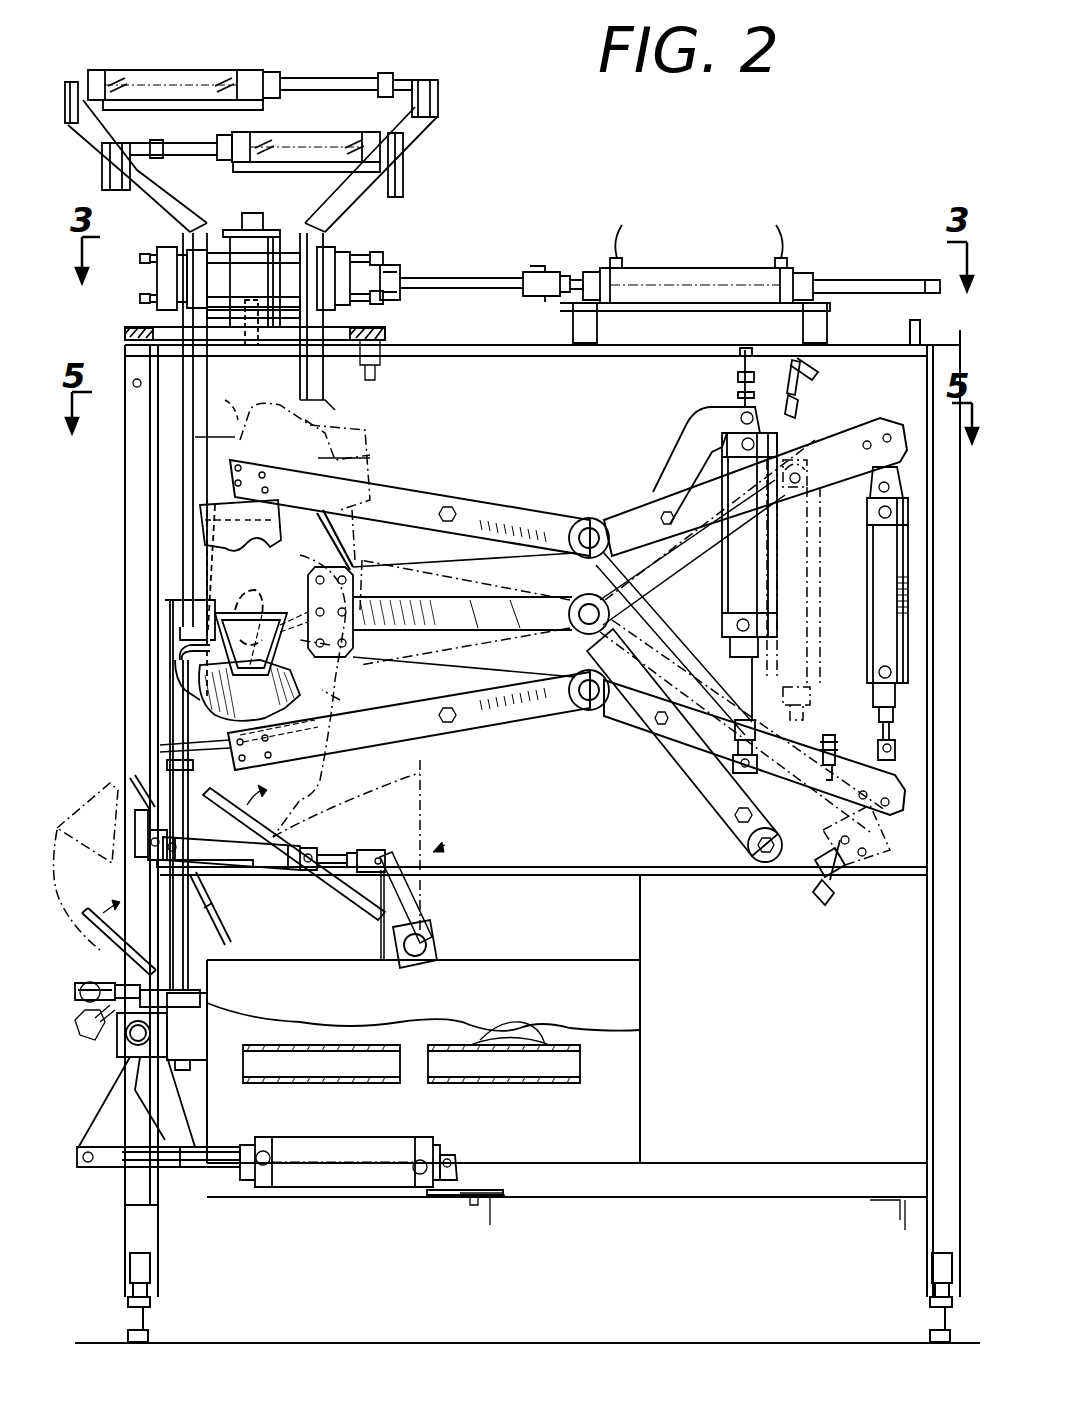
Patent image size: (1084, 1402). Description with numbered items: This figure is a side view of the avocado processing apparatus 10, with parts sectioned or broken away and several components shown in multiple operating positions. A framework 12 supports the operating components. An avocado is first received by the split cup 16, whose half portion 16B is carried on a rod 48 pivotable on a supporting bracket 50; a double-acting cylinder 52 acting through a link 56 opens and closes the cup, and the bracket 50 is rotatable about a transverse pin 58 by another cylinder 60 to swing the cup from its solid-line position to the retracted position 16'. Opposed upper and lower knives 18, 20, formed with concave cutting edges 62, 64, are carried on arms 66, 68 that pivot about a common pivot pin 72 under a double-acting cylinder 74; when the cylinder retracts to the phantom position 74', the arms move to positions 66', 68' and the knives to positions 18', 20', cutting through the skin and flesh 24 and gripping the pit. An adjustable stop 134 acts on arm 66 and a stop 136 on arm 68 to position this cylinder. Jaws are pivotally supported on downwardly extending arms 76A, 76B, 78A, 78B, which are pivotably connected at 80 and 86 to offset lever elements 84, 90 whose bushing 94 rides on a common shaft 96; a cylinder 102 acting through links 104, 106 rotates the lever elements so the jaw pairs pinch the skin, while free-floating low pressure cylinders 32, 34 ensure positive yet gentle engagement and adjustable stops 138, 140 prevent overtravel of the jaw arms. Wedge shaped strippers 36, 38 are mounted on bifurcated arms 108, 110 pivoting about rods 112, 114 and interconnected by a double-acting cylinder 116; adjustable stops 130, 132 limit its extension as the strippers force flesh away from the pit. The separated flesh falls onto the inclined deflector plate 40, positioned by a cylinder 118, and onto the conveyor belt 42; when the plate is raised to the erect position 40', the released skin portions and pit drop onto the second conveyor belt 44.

The apparatus 10 is at (873, 228).
The framework 12 is at (123, 456).
The split cup 16 is at (142, 620).
The cup half portion 16B is at (185, 652).
The retracted position of split cup 16' is at (104, 865).
The upper knife 18 is at (142, 600).
The shifted position of upper knife 18' is at (374, 440).
The lower knife 20 is at (197, 701).
The shifted position of lower knife 20' is at (330, 620).
The avocado flesh 24 is at (512, 1040).
The low pressure cylinder 32 is at (190, 70).
The low pressure cylinder 34 is at (312, 133).
The wedge shaped stripper 36 is at (200, 515).
The wedge shaped stripper 38 is at (165, 742).
The inclined deflector plate 40 is at (294, 852).
The erect position of deflector plate 40' is at (440, 864).
The conveyor belt 42 is at (527, 1085).
The second conveyor belt 44 is at (328, 1083).
The rod 48 is at (170, 714).
The supporting bracket 50 is at (210, 1050).
The double-acting cylinder 52 is at (95, 988).
The link 56 is at (195, 998).
The transverse pin 58 is at (125, 1040).
The cylinder 60 is at (348, 1165).
The concave cutting edge 62 is at (248, 600).
The concave cutting edge 64 is at (262, 605).
The arm 66 is at (528, 516).
The shifted position of arm 66' is at (798, 496).
The arm 68 is at (569, 671).
The shifted position of arm 68' is at (625, 652).
The common pivot pin 72 is at (600, 613).
The double-acting cylinder 74 is at (723, 603).
The retracted position of cylinder 74' is at (813, 590).
The downwardly extending arm 76A is at (340, 405).
The downwardly extending arm 76B is at (230, 380).
The downwardly extending arm 78A is at (370, 470).
The downwardly extending arm 78B is at (243, 436).
The pivotable connection 80 is at (375, 275).
The offset lever element 84 is at (215, 313).
The pivotable connection 86 is at (195, 280).
The offset lever element 90 is at (285, 240).
The bushing 94 is at (272, 335).
The common shaft 96 is at (240, 240).
The cylinder 102 is at (685, 268).
The link 104 is at (510, 292).
The link 106 is at (495, 275).
The bifurcated arm 108 is at (538, 520).
The bifurcated arm 110 is at (505, 722).
The rod 112 is at (587, 525).
The rod 114 is at (585, 712).
The double-acting cylinder 116 is at (868, 578).
The cylinder 118 is at (290, 870).
The adjustable stop 130 is at (800, 385).
The adjustable stop 132 is at (850, 870).
The adjustable stop 134 is at (740, 390).
The stop 136 is at (840, 740).
The adjustable stop 138 is at (372, 252).
The adjustable stop 140 is at (145, 252).